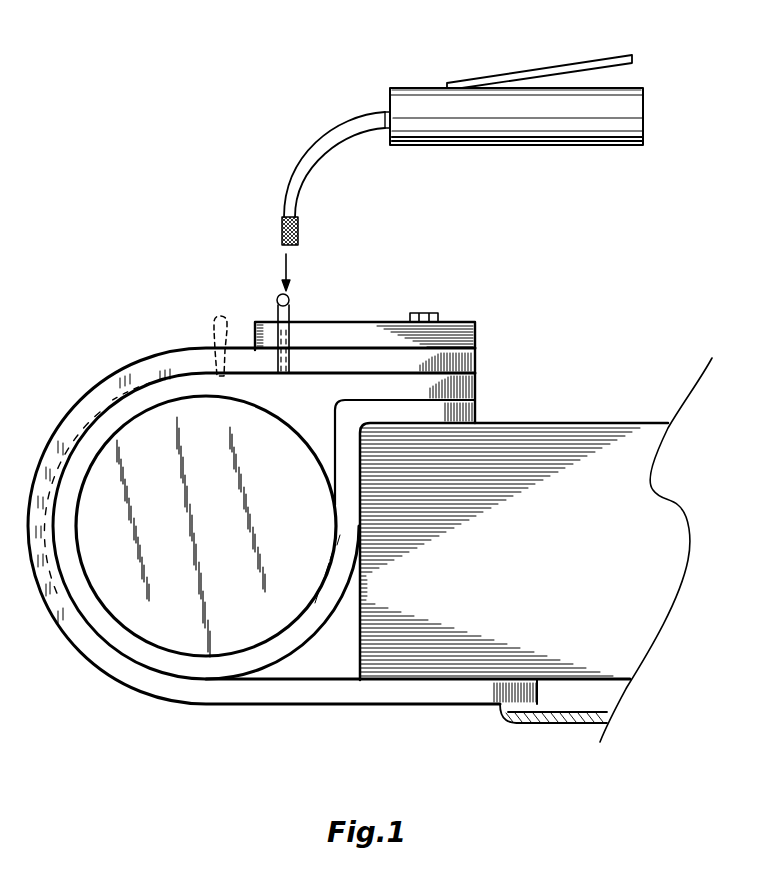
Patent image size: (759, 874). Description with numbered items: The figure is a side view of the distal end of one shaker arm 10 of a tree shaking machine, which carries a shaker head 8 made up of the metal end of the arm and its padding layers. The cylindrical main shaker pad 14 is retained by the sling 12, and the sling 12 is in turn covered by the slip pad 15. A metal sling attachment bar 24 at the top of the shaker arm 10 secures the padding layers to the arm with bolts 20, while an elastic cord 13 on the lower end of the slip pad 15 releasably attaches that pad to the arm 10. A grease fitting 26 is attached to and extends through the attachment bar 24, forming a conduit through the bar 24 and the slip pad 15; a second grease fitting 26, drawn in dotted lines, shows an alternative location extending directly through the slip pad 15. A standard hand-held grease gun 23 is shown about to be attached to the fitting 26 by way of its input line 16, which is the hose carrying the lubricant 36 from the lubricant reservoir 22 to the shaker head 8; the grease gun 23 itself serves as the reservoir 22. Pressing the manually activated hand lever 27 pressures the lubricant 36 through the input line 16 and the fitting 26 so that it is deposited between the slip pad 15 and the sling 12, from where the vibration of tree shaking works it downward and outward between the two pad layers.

The shaker head 8 is at (325, 503).
The shaker arm 10 is at (583, 423).
The sling 12 is at (153, 653).
The elastic cord 13 is at (540, 724).
The main shaker pad 14 is at (228, 628).
The slip pad 15 is at (80, 638).
The input line 16 is at (310, 155).
The bolts 20 is at (432, 311).
The lubricant reservoir 22 is at (514, 108).
The grease gun 23 is at (427, 88).
The sling attachment bar 24 is at (477, 340).
The grease fitting 26 is at (220, 315).
The hand lever 27 is at (556, 65).
The lubricant 36 is at (56, 488).